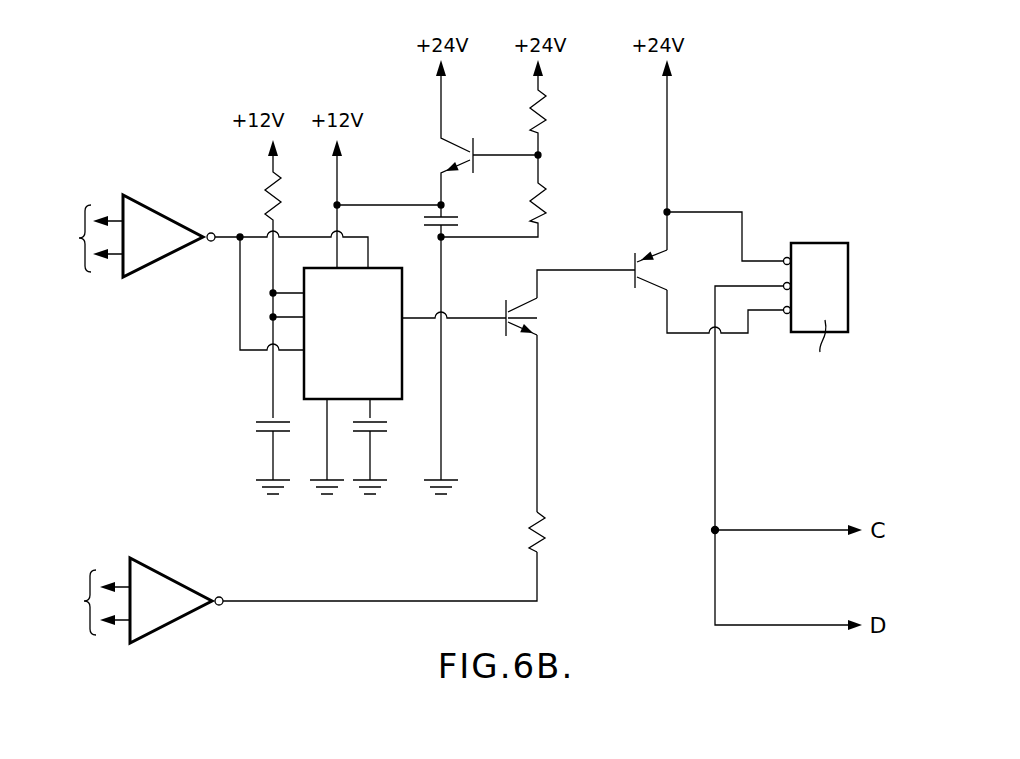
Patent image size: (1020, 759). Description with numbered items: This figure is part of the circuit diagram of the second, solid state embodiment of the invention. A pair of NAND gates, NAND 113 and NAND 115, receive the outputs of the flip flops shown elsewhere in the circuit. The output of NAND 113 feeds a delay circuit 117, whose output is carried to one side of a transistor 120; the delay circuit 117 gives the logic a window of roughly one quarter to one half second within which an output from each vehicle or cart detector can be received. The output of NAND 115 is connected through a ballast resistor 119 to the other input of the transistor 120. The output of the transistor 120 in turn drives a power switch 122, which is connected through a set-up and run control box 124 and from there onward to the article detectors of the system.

The NAND 113 is at (185, 220).
The NAND 115 is at (185, 585).
The delay circuit 117 is at (378, 268).
The ballast resistor 119 is at (545, 544).
The transistor 120 is at (515, 345).
The power switch 122 is at (644, 300).
The control box 124 is at (828, 243).